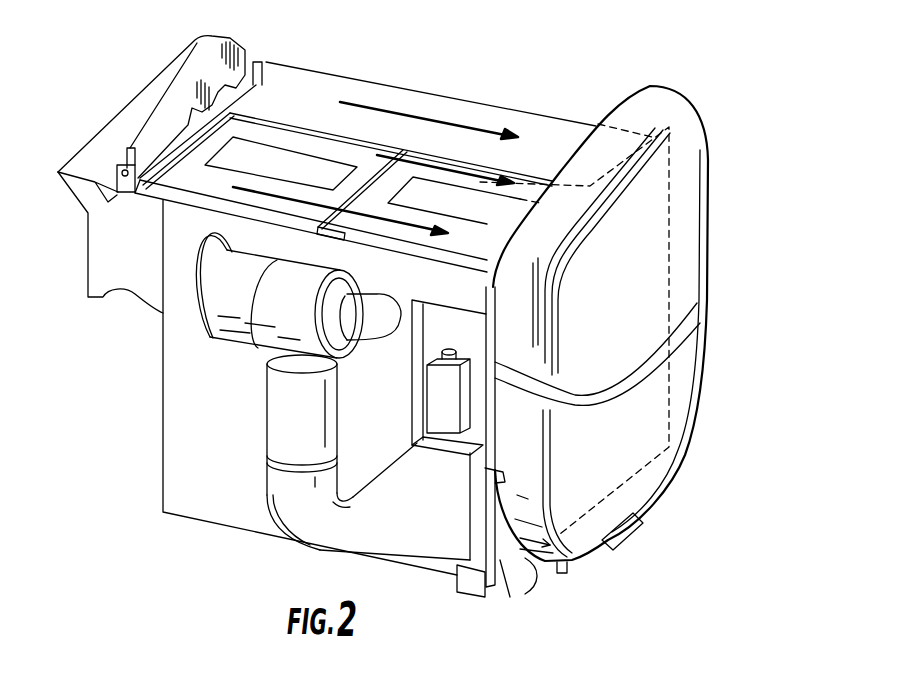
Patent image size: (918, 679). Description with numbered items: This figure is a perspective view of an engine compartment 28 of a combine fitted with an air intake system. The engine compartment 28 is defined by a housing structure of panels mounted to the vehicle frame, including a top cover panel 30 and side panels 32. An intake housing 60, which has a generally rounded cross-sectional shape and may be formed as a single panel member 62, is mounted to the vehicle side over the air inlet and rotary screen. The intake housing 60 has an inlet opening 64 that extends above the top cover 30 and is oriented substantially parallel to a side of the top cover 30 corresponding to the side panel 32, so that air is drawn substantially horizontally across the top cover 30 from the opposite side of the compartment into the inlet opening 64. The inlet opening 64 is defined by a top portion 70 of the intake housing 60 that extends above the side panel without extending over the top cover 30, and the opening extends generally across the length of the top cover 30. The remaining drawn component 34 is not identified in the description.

The engine compartment 28 is at (513, 58).
The top cover panel 30 is at (298, 85).
The side panels 32 is at (670, 210).
The cabinet housing 34 is at (182, 457).
The intake housing 60 is at (643, 281).
The single panel member 62 is at (687, 383).
The inlet opening 64 is at (607, 108).
The top portion 70 is at (648, 103).